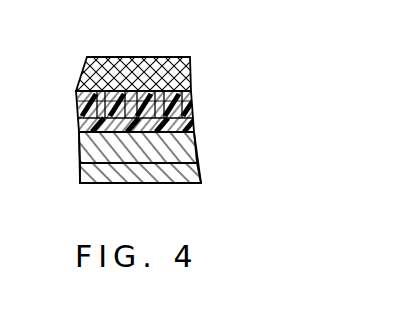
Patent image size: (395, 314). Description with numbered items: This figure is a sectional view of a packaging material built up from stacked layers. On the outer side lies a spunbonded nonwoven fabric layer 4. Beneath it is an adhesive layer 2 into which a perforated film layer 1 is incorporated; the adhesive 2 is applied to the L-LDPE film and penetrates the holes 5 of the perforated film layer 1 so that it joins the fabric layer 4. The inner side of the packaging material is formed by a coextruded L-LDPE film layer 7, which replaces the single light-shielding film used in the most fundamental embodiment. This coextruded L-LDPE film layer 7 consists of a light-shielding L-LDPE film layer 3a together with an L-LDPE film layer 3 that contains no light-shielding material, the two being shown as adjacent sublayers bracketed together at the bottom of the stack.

The perforated film layer 1 is at (192, 113).
The adhesive layer 2 is at (82, 93).
The L-LDPE film layer without a light-shielding material 3 is at (190, 178).
The light-shielding L-LDPE film layer 3a is at (190, 145).
The spunbonded nonwoven fabric layer 4 is at (189, 82).
The holes 5 is at (83, 110).
The coextruded L-LDPE film layer 7 is at (255, 133).